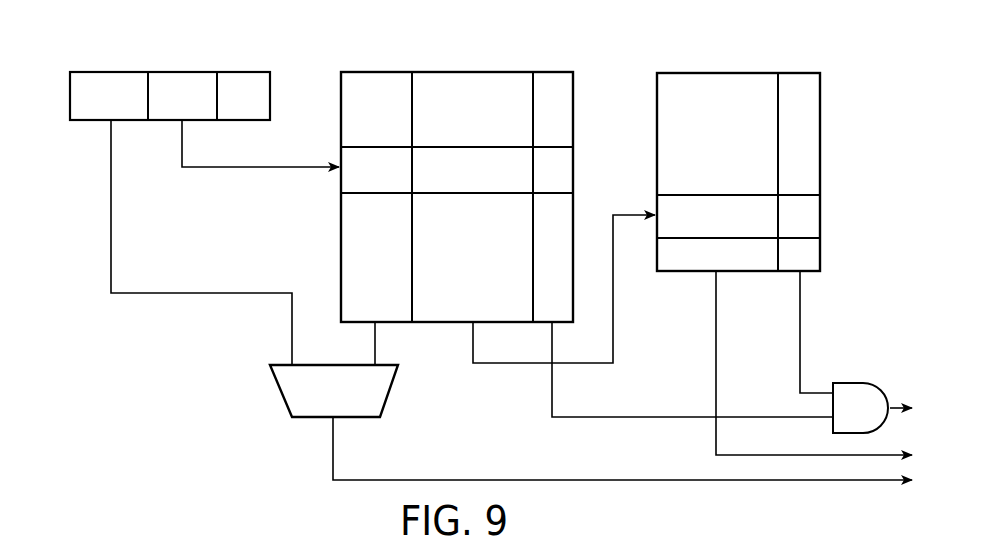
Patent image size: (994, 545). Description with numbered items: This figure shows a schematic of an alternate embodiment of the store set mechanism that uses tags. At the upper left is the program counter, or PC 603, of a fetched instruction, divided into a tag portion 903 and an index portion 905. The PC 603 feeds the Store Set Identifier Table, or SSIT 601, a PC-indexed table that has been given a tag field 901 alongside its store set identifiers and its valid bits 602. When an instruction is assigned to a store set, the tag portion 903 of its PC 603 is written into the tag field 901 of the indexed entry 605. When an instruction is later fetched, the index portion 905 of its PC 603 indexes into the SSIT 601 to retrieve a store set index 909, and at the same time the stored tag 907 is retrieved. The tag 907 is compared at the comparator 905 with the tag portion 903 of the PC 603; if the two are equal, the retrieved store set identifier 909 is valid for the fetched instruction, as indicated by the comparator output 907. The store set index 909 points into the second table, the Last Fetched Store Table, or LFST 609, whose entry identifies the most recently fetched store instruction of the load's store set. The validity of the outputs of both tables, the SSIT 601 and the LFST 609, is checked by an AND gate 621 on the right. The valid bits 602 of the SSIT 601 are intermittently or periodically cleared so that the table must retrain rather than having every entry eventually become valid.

The tag portion 903 is at (111, 72).
The index portion / comparator 905 is at (183, 72).
The PC 603 is at (92, 122).
The tag field 901 is at (377, 72).
The Store Set Identifier Table (SSIT) 601 is at (464, 72).
The valid bits 602 is at (550, 72).
The indexed entry / store set identifier (SSID) 605 is at (341, 183).
The tag / comparator output 907 is at (377, 346).
The store set index 909 is at (500, 366).
The Last Fetched Store Table (LFST) 609 is at (711, 73).
The AND gate 621 is at (850, 383).